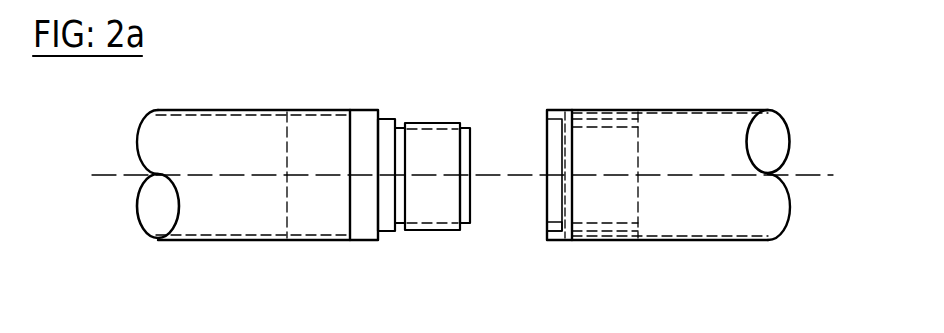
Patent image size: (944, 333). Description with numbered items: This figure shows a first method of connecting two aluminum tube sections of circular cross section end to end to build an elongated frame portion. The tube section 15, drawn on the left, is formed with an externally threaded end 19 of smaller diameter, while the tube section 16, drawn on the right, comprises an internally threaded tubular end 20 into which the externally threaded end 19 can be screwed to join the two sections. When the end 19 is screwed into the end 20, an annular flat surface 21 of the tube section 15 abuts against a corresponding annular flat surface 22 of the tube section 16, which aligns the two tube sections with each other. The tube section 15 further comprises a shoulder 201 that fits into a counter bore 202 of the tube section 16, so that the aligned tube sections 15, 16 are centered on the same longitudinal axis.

The tube section 15 is at (220, 242).
The tube section 16 is at (713, 238).
The externally threaded end 19 is at (440, 215).
The internally threaded tubular end 20 is at (633, 127).
The annular flat surface 21 is at (388, 110).
The annular flat surface 22 is at (542, 110).
The shoulder 201 is at (390, 233).
The counter bore 202 is at (550, 223).